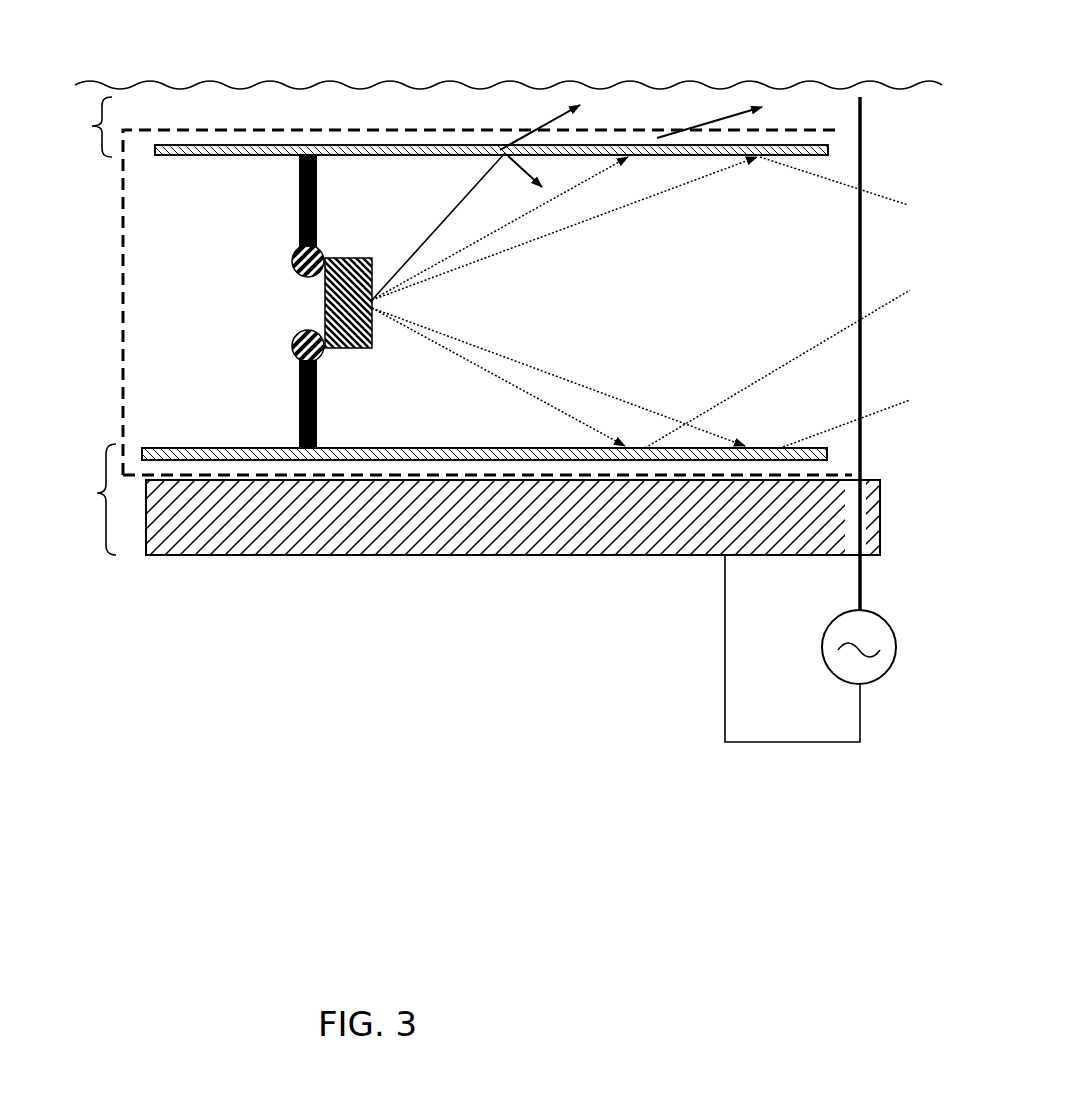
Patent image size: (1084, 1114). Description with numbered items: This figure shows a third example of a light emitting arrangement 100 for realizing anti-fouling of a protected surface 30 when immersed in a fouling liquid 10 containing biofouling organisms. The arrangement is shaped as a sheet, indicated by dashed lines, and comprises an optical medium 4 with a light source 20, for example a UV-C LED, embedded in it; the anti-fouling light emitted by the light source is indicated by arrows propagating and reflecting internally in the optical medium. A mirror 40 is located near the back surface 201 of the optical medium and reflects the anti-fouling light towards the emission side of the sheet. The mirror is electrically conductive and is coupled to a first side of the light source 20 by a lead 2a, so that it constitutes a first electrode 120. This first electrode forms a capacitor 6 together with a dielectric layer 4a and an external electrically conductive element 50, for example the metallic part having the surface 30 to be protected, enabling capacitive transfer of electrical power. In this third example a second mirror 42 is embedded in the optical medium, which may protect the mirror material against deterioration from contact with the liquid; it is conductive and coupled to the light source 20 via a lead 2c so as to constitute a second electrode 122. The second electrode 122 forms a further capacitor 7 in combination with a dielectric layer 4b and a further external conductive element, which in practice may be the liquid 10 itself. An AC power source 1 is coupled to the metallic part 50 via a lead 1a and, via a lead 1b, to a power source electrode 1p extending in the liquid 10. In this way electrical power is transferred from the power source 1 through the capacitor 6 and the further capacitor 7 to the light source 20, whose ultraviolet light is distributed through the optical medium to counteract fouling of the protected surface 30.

The AC power source 1 is at (893, 660).
The lead 1a is at (860, 727).
The lead 1b is at (860, 588).
The power source electrode 1p is at (866, 103).
The lead 2a is at (318, 402).
The lead 2c is at (318, 185).
The optical medium 4 is at (150, 248).
The dielectric layer 4a is at (542, 408).
The dielectric layer 4b is at (548, 99).
The capacitor 6 is at (98, 499).
The further capacitor 7 is at (88, 127).
The fouling liquid 10 is at (635, 80).
The light source 20 is at (325, 302).
The protected surface 30 is at (255, 488).
The mirror 40 is at (552, 442).
The second mirror 42 is at (690, 160).
The external electrically conductive element 50 is at (513, 555).
The light emitting arrangement 100 is at (440, 302).
The first electrode 120 is at (200, 447).
The second electrode 122 is at (445, 145).
The back surface 201 is at (133, 484).